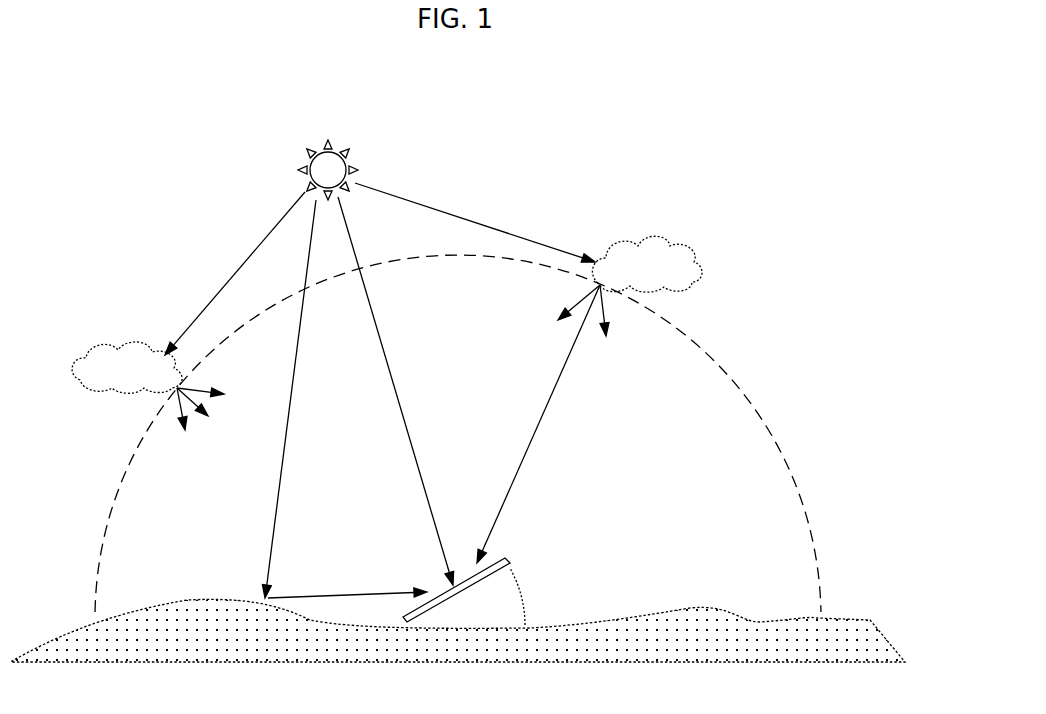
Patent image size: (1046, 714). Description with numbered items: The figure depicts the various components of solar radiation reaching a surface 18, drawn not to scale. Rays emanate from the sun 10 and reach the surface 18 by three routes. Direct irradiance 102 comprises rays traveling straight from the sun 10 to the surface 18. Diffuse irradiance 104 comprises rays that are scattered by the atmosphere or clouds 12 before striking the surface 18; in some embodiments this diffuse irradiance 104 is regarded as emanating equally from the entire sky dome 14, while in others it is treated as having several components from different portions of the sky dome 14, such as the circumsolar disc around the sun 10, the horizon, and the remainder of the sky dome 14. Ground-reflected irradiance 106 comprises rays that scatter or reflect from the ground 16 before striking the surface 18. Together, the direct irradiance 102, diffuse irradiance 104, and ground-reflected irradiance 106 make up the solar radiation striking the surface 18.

The sun 10 is at (346, 152).
The atmosphere or clouds 12 is at (457, 298).
The sky dome 14 is at (507, 433).
The ground 16 is at (458, 618).
The surface 18 is at (513, 580).
The direct irradiance 102 is at (396, 391).
The diffuse irradiance 104 is at (536, 424).
The ground-reflected irradiance 106 is at (344, 399).